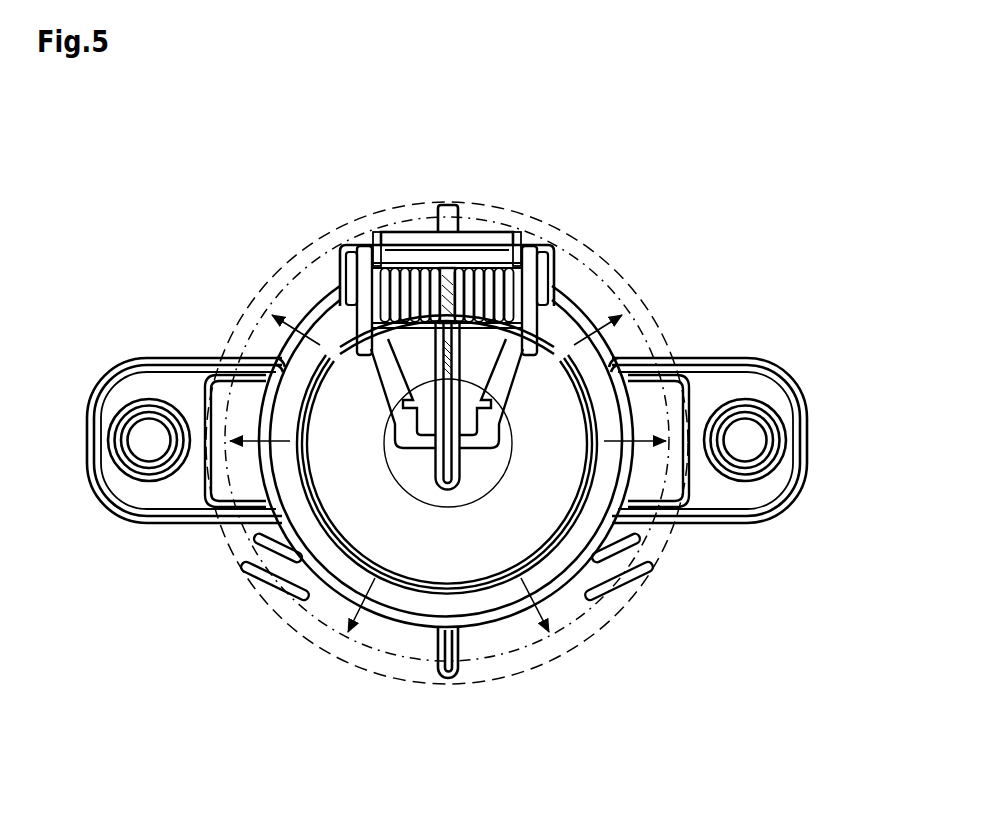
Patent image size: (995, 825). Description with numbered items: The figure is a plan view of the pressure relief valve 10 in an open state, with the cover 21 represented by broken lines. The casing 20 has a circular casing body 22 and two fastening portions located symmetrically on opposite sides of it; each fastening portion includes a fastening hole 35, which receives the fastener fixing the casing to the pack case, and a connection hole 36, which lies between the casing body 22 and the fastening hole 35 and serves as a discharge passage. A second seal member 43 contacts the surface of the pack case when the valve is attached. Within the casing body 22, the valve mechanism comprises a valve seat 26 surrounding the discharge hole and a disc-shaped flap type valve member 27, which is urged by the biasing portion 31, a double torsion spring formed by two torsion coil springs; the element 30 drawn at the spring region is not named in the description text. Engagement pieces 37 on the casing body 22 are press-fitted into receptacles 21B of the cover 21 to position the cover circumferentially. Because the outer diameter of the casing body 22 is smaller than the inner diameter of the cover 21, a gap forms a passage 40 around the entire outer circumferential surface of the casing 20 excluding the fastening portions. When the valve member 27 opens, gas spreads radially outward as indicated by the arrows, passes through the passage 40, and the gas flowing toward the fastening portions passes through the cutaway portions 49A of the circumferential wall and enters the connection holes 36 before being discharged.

The pressure relief valve 10 is at (198, 226).
The casing 20 is at (560, 245).
The cover 21 is at (521, 216).
The receptacles 21B is at (248, 548).
The casing body 22 is at (618, 348).
The valve seat 26 is at (512, 578).
The valve member 27 is at (426, 559).
The spring housing 30 is at (335, 283).
The biasing portion 31 is at (418, 252).
The fastening hole 35 is at (126, 450).
The connection hole 36 is at (242, 388).
The engagement pieces 37 is at (288, 599).
The passage 40 is at (320, 621).
The second seal member 43 is at (133, 360).
The cutaway portions 49A is at (277, 426).